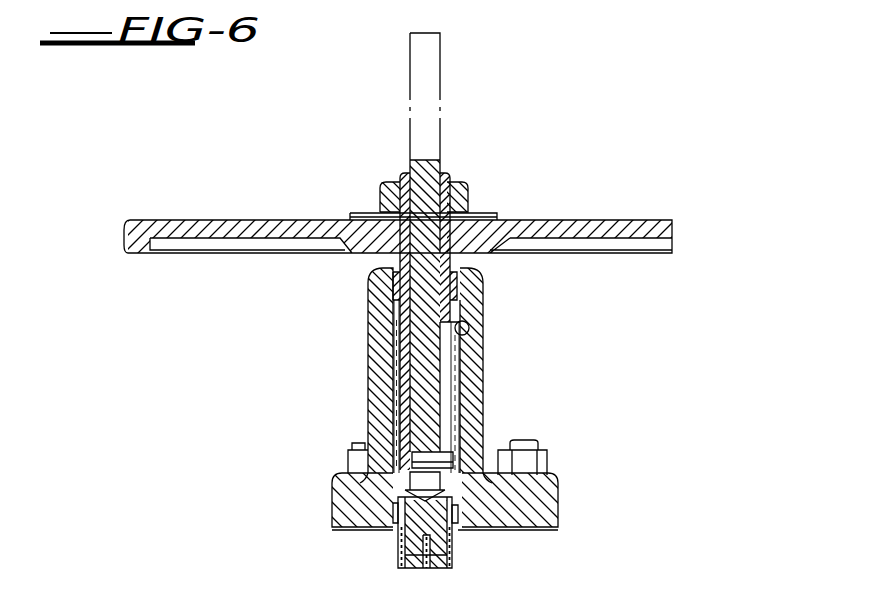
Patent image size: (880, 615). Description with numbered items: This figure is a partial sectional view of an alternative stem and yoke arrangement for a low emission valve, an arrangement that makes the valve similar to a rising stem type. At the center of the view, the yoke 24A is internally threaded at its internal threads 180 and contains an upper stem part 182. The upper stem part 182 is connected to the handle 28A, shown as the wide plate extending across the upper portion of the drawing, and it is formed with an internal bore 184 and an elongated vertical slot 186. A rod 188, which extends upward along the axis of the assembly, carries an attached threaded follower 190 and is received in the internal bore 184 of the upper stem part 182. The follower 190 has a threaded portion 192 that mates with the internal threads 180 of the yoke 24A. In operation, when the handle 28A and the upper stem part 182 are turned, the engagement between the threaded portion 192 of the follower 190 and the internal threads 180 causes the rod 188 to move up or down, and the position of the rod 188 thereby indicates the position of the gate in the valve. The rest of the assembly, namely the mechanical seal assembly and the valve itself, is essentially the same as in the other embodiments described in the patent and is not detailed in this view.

The rod 188 is at (440, 162).
The handle 28A is at (226, 238).
The elongated vertical slot 186 is at (466, 316).
The yoke 24A is at (476, 369).
The internal bore 184 is at (416, 364).
The upper stem part 182 is at (401, 427).
The threaded follower 190 is at (440, 462).
The threaded portion 192 is at (452, 452).
The internal threads 180 is at (483, 470).